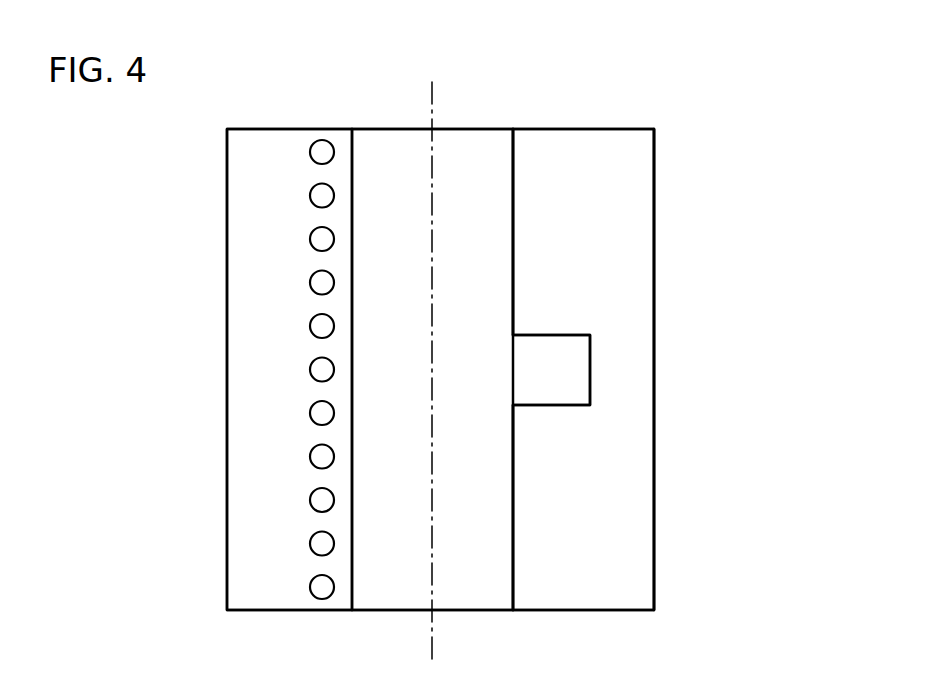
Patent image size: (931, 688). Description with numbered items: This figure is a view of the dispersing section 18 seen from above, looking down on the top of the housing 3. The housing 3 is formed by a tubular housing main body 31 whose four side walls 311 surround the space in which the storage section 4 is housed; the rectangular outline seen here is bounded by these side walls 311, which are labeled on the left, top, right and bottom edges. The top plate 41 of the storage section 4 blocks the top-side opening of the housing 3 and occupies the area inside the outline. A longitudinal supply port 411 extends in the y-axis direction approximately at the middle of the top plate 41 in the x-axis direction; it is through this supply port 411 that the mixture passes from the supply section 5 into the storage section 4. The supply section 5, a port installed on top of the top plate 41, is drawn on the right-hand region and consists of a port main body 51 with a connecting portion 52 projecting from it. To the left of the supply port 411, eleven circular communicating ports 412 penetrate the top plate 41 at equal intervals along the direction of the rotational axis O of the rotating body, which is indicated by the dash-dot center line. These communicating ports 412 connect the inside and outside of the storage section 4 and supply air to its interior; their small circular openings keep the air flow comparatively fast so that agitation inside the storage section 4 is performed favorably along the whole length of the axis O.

The dispersing section 18 is at (715, 83).
The housing 3 is at (655, 145).
The housing main body 31 is at (655, 322).
The side walls 311 is at (227, 173).
The storage section 4 is at (470, 215).
The top plate 41 is at (598, 160).
The supply port 411 is at (380, 220).
The communicating ports 412 is at (309, 368).
The supply section 5 is at (516, 540).
The port main body 51 is at (478, 480).
The connecting portion 52 is at (570, 373).
The rotational axis O is at (433, 612).